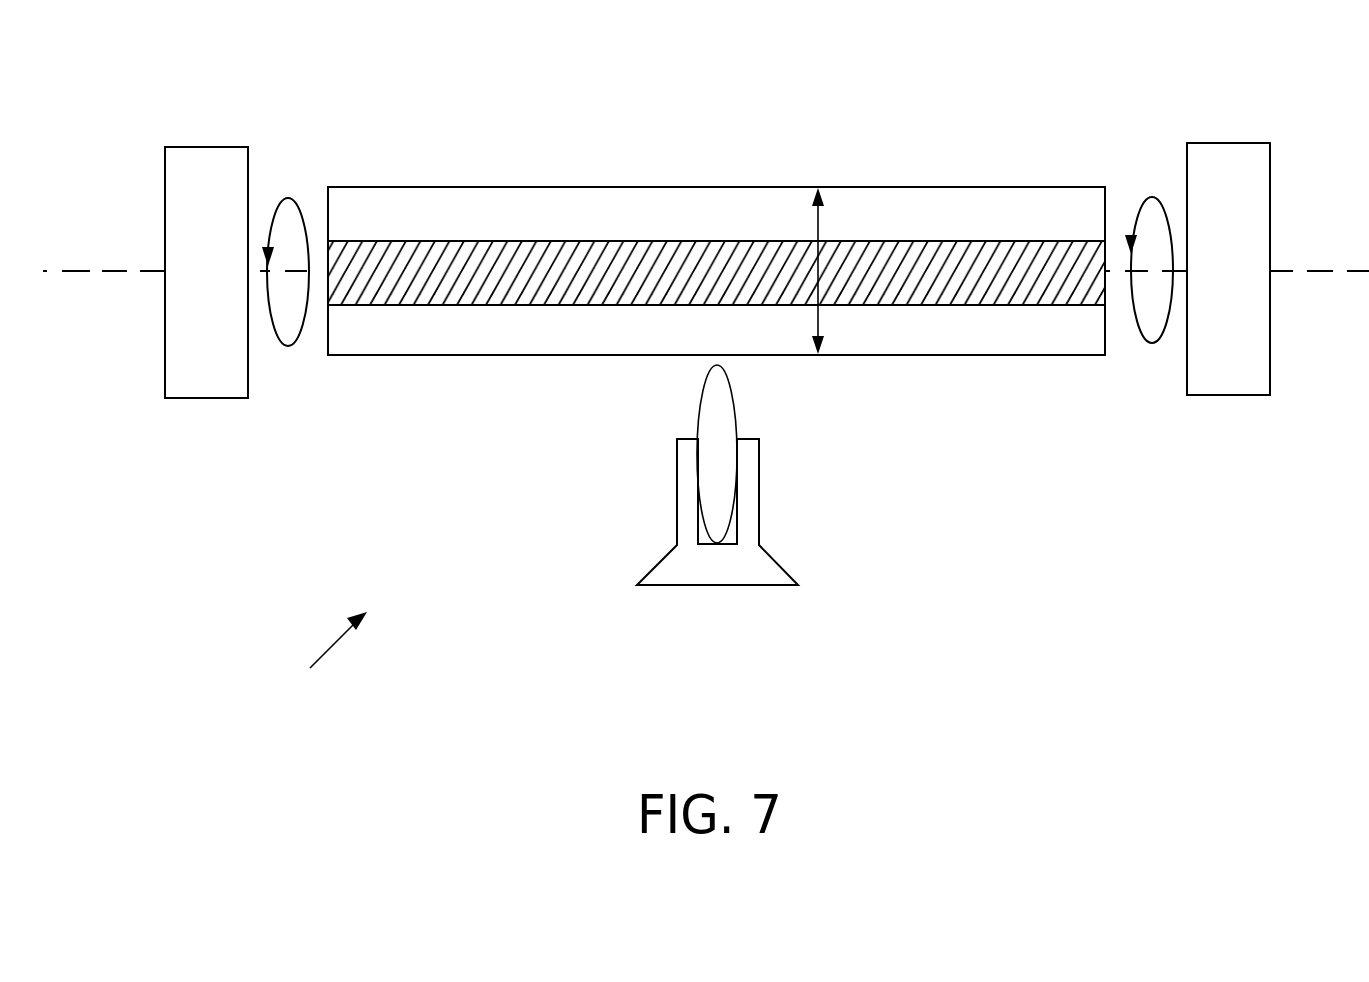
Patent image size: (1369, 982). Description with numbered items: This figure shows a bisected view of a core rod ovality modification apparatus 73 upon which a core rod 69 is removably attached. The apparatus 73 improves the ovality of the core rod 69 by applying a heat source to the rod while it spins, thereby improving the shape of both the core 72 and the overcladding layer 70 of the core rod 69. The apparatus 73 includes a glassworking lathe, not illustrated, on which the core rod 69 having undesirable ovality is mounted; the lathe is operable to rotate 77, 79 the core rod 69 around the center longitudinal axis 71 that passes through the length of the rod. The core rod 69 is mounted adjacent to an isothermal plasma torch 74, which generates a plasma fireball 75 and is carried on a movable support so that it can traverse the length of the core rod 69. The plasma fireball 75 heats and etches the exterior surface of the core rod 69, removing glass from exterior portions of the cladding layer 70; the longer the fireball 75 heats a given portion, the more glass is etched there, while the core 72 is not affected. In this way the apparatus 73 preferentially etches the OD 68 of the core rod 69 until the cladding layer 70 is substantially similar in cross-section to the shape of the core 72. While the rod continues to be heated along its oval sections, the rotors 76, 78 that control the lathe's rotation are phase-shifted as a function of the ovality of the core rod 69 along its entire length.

The OD 68 is at (822, 208).
The core rod 69 is at (947, 364).
The overcladding layer 70 is at (580, 318).
The center longitudinal axis 71 is at (101, 270).
The core 72 is at (470, 295).
The core rod ovality modification apparatus 73 is at (323, 655).
The isothermal plasma torch 74 is at (739, 565).
The plasma fireball 75 is at (717, 418).
The rotor 76 is at (1248, 352).
The rotation 77 is at (1147, 198).
The rotor 78 is at (227, 358).
The rotation 79 is at (287, 198).